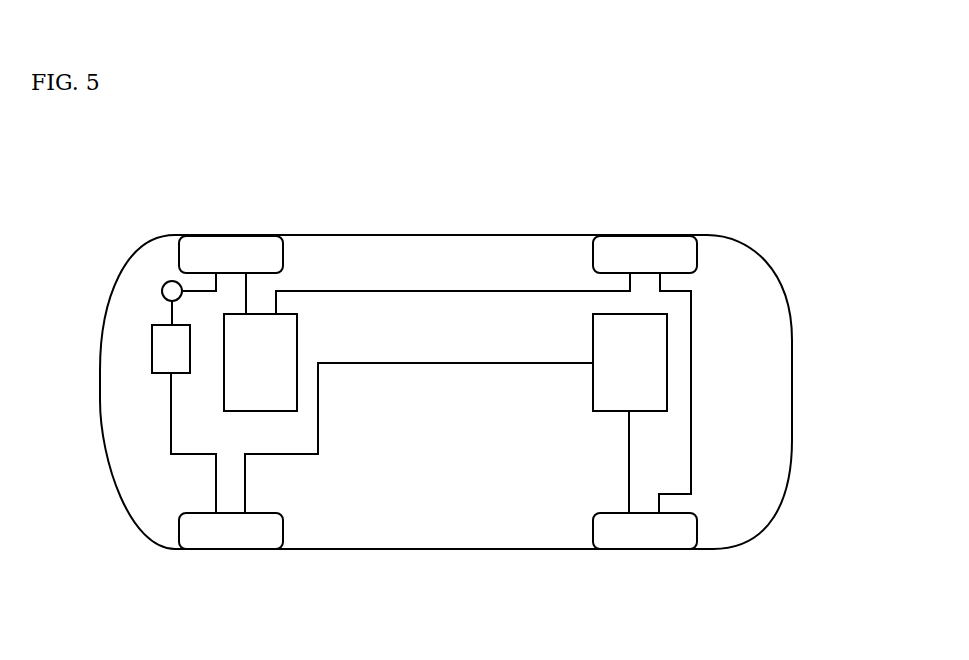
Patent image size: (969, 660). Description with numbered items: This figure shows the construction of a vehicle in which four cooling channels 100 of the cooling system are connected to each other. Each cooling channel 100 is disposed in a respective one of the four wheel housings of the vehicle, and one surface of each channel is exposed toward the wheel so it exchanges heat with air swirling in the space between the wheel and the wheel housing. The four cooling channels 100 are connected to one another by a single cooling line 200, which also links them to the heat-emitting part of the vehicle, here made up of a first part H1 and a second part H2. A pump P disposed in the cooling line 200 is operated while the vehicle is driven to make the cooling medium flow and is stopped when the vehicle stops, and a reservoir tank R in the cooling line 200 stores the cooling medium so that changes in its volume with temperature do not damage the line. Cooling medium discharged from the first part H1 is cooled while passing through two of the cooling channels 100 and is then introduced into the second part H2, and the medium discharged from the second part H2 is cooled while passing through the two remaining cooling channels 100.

The cooling channel 100 is at (236, 246).
The cooling line 200 is at (475, 290).
The pump P is at (163, 285).
The reservoir tank R is at (160, 350).
The first part H1 is at (230, 395).
The second part H2 is at (655, 358).